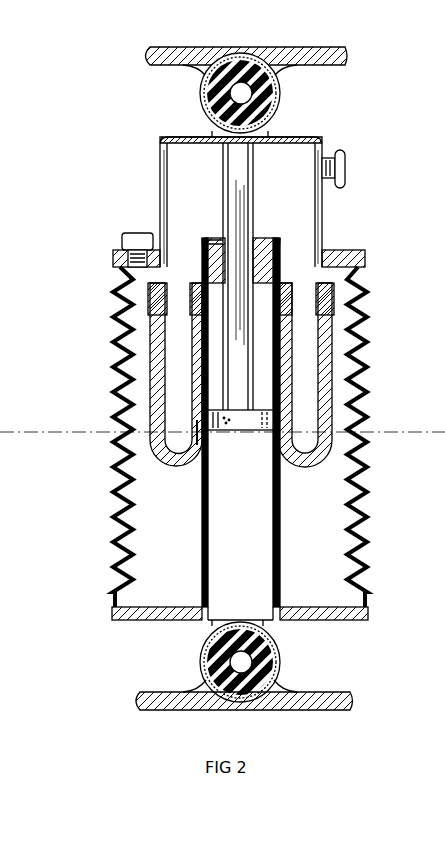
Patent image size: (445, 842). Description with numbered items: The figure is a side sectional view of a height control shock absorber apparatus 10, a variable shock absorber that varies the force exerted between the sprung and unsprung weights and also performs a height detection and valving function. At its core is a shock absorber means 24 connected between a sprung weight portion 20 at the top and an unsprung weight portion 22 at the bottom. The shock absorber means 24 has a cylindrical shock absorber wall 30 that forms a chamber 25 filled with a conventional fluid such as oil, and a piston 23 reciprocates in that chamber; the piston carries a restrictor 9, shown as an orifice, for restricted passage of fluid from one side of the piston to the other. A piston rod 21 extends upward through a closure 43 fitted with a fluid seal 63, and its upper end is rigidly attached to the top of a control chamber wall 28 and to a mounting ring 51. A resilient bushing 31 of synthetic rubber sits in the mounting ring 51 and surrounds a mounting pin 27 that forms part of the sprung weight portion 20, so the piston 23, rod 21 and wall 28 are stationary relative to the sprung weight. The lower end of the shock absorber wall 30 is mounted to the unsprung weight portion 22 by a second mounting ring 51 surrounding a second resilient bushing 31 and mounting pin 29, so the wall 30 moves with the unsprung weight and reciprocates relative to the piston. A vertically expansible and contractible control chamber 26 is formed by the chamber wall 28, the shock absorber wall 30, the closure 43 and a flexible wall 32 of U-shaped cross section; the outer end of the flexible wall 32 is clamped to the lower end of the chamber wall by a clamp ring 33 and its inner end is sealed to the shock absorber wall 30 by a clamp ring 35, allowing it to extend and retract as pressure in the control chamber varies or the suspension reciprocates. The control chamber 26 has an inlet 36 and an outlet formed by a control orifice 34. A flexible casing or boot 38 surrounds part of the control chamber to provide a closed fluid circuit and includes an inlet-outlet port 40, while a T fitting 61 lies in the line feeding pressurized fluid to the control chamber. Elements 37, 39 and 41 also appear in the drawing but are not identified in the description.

The restrictor 9 is at (262, 432).
The height control shock absorber apparatus 10 is at (323, 139).
The sprung weight portion 20 is at (296, 47).
The piston rod 21 is at (238, 188).
The unsprung weight portion 22 is at (315, 712).
The piston 23 is at (243, 432).
The shock absorber means 24 is at (283, 565).
The chamber 25 is at (257, 527).
The control chamber 26 is at (302, 232).
The mounting pin 27 is at (243, 96).
The control chamber wall 28 is at (160, 162).
The mounting pin 29 is at (245, 662).
The cylindrical shock absorber wall 30 is at (200, 240).
The resilient bushing 31 is at (210, 91).
The flexible wall 32 is at (150, 353).
The clamp ring 33 is at (128, 288).
The control orifice 34 is at (200, 432).
The clamp ring 35 is at (190, 303).
The inlet 36 is at (345, 163).
The outer chamber 37 is at (162, 498).
The flexible casing or boot 38 is at (365, 506).
The upper plate 39 is at (352, 251).
The inlet-outlet port 40 is at (140, 235).
The lower plate 41 is at (340, 620).
The closure 43 is at (279, 272).
The mounting ring 51 is at (278, 113).
The T fitting 61 is at (215, 250).
The fluid seal 63 is at (205, 270).